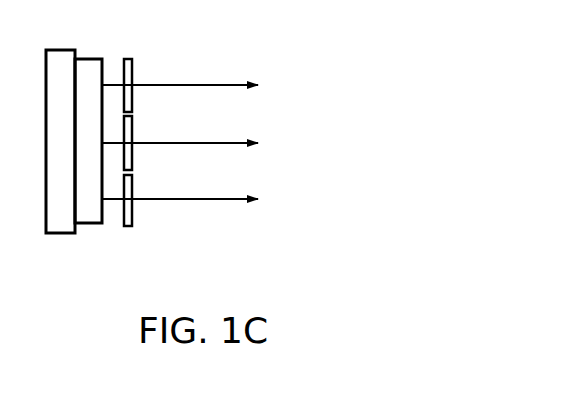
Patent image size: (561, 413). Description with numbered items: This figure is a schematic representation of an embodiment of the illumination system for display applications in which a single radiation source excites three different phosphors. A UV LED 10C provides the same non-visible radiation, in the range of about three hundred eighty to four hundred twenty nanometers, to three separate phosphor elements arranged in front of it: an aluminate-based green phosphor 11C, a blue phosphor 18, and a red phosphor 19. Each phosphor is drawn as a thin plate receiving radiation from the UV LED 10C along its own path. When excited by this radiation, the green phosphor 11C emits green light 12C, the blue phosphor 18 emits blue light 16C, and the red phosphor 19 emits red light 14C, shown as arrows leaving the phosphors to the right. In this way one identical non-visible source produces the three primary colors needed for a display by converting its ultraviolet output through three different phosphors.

The UV LED 10C is at (89, 228).
The green phosphor 11C is at (136, 75).
The blue phosphor 18 is at (138, 152).
The red phosphor 19 is at (138, 210).
The green light 12C is at (373, 87).
The blue light 16C is at (348, 143).
The red light 14C is at (336, 202).